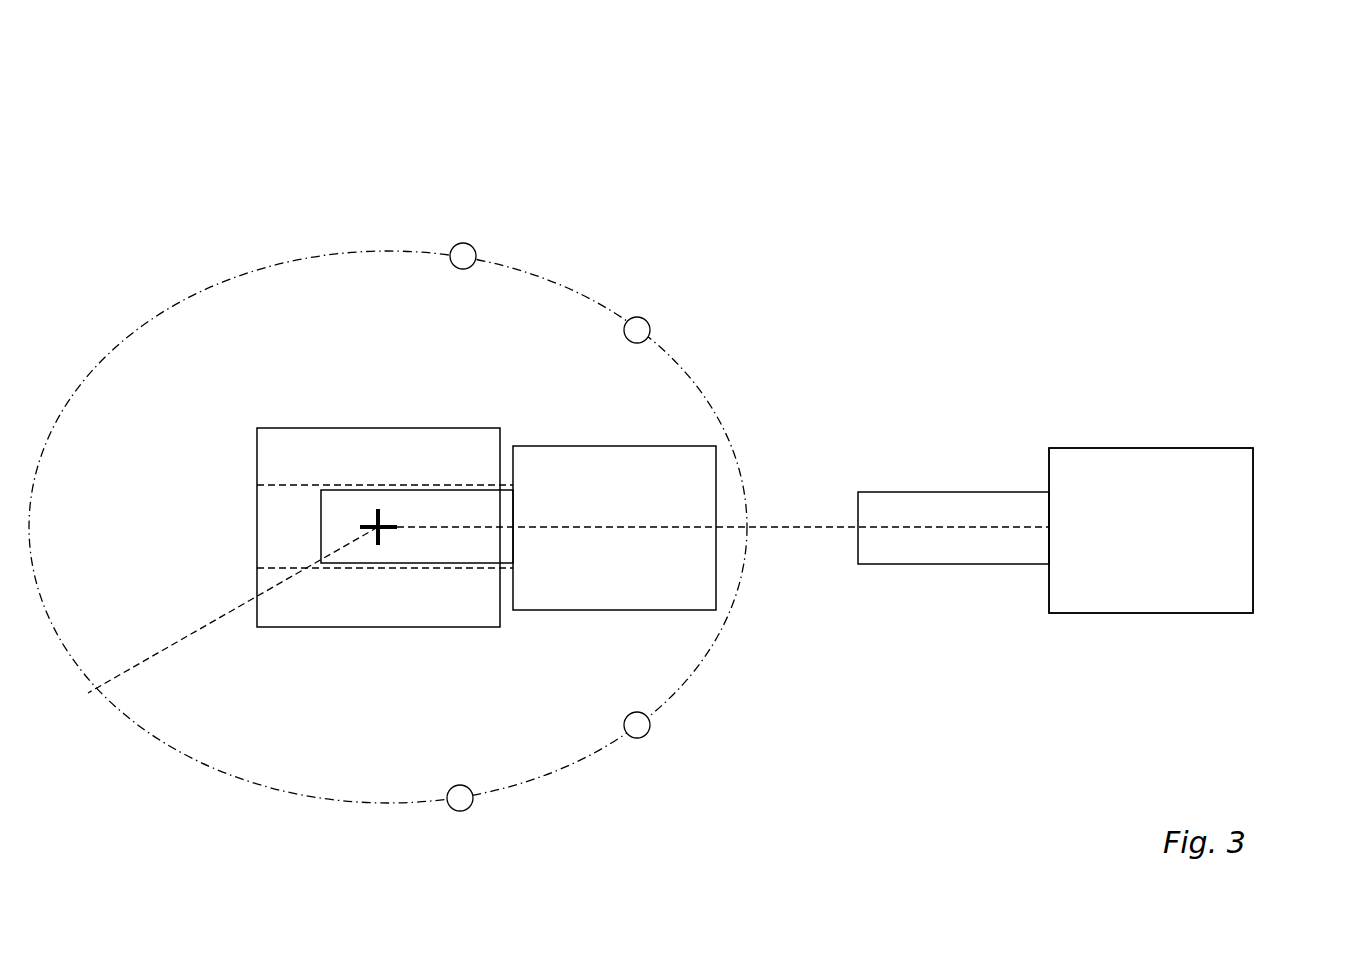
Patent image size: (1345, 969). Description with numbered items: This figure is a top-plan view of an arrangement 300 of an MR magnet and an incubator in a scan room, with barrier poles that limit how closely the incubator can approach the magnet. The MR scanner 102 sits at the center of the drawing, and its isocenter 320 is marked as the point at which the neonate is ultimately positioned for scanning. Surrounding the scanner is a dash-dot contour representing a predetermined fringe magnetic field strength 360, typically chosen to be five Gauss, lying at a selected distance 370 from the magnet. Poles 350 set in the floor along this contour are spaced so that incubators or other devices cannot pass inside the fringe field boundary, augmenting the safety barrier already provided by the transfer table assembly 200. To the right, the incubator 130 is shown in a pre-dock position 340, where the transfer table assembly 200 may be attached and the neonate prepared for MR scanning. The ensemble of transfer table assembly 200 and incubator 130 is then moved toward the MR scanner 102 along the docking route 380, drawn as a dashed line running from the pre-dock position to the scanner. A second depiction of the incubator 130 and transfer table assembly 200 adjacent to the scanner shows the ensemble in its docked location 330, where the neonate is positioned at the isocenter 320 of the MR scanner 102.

The system 300 is at (642, 53).
The MR scanner 102 is at (400, 428).
The incubator 130 is at (883, 529).
The transfer table assembly 200 is at (406, 563).
The isocenter 320 is at (376, 518).
The docked location 330 is at (755, 539).
The pre-dock position 340 is at (1235, 445).
The poles 350 is at (470, 244).
The fringe magnetic field strength 360 is at (233, 775).
The selected distance 370 is at (172, 645).
The docking route 380 is at (763, 530).